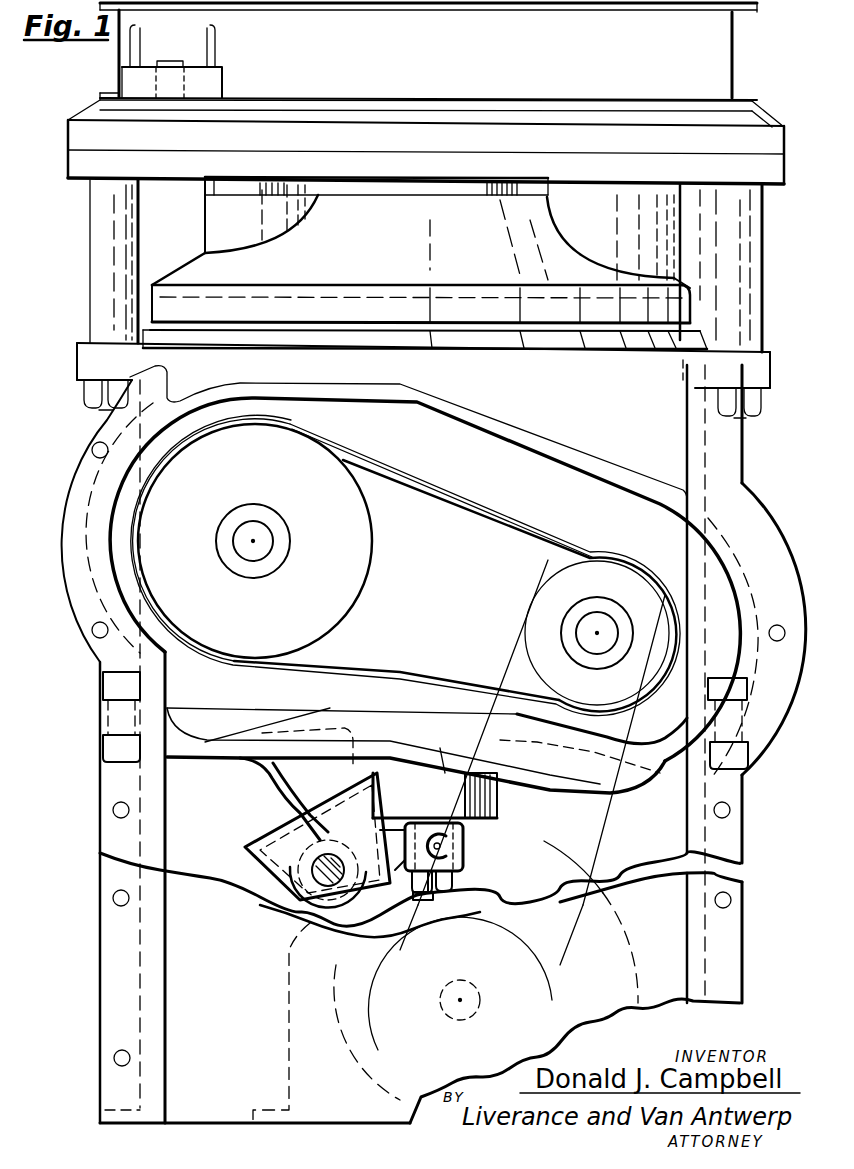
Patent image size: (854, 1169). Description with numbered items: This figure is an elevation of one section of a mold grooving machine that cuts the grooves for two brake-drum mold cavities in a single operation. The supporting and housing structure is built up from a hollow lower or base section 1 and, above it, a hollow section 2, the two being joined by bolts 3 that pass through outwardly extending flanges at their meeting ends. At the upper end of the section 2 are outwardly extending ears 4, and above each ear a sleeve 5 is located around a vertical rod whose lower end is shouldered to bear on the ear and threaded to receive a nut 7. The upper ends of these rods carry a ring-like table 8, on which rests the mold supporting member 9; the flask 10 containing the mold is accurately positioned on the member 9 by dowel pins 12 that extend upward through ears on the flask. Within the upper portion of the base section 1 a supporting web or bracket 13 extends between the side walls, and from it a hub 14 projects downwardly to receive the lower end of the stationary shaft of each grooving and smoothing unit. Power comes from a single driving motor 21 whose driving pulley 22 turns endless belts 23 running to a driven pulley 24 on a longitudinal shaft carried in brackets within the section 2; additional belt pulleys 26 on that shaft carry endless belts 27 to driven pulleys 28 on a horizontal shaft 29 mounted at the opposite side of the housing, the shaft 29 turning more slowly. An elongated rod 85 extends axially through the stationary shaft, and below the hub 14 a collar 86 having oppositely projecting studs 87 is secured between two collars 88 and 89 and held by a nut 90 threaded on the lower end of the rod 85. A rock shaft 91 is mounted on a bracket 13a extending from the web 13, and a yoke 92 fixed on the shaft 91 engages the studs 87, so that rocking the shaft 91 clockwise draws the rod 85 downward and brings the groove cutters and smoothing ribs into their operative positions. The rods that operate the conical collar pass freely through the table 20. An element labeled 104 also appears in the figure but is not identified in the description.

The lower or base section 1 is at (674, 940).
The section 2 is at (717, 501).
The bolts 3 is at (113, 760).
The outwardly extending ears 4 is at (86, 358).
The spaced sleeves 5 is at (104, 228).
The nuts 7 is at (100, 407).
The ring-like table 8 is at (775, 169).
The mold supporting member 9 is at (760, 133).
The flask 10 is at (716, 61).
The dowel pins 12 is at (183, 63).
The supporting web or bracket 13 is at (282, 728).
The bracket 13a is at (240, 878).
The hub 14 is at (500, 802).
The table 20 is at (487, 277).
The driving motor 21 is at (310, 1033).
The driving pulley 22 is at (527, 1012).
The endless belts 23 is at (615, 821).
The driven pulley 24 is at (550, 572).
The additional belt pulleys 26 is at (538, 594).
The endless belts 27 is at (447, 503).
The driven pulleys 28 is at (352, 586).
The horizontal shaft 29 is at (257, 548).
The elongated rod 85 is at (436, 887).
The collar 86 is at (464, 847).
The studs 87 is at (470, 866).
The collar 88 is at (446, 838).
The collar 89 is at (440, 890).
The nut 90 is at (424, 898).
The rock shaft 91 is at (314, 900).
The yoke 92 is at (405, 880).
The hatch strip 104 is at (482, 186).